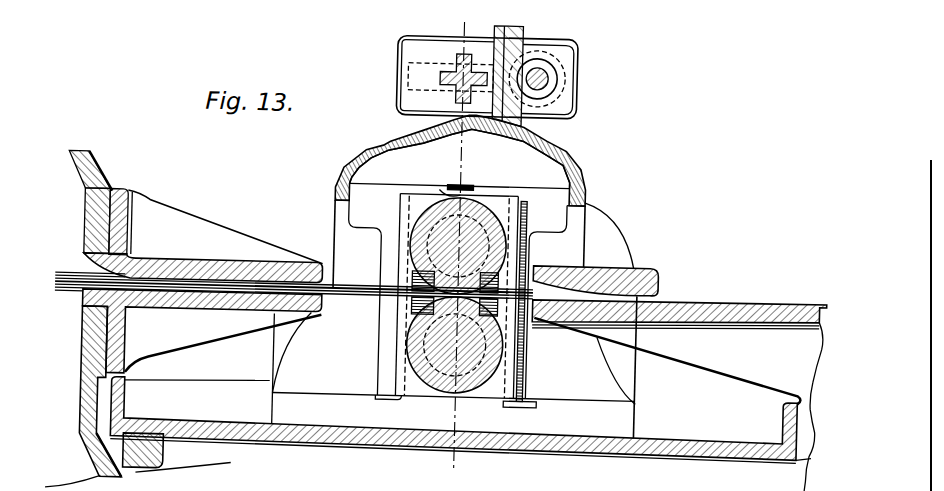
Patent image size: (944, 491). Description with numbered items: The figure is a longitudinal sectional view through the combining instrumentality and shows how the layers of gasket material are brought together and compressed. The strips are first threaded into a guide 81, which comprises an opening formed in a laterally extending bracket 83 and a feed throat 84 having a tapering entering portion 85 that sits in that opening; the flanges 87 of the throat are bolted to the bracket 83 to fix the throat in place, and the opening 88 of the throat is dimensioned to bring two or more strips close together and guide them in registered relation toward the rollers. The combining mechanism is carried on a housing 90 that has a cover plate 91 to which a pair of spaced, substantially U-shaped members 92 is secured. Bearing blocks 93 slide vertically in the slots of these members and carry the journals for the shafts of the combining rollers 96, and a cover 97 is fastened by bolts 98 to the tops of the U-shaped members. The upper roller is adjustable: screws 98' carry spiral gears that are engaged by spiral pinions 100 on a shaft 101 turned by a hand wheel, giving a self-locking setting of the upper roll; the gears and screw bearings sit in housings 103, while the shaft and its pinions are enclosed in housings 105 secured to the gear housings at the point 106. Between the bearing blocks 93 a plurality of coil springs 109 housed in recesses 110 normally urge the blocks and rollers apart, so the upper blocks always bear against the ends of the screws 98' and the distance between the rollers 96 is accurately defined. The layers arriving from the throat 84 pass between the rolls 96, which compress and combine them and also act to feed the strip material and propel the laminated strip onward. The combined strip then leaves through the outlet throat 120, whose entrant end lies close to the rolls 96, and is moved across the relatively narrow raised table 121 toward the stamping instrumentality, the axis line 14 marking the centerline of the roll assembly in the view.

The center line of carriage 14 is at (458, 246).
The guide 81 is at (174, 226).
The bracket 83 is at (88, 233).
The feed throat 84 is at (180, 310).
The tapering entering portion 85 is at (83, 304).
The flanges 87 is at (115, 198).
The opening 88 is at (191, 271).
The housing 90 is at (167, 454).
The cover plate 91 is at (338, 436).
The U-shaped members 92 is at (607, 238).
The bearing blocks 93 is at (502, 214).
The combining rollers 96 is at (409, 251).
The cover 97 is at (505, 136).
The bolts 98 is at (461, 156).
The screws 98' is at (399, 320).
The spiral pinions 100 is at (541, 61).
The shaft 101 is at (545, 76).
The housings 103 is at (402, 39).
The housings 105 is at (554, 105).
The securing point 106 is at (499, 26).
The springs 109 is at (526, 318).
The recesses 110 is at (415, 299).
The outlet throat 120 is at (644, 265).
The table 121 is at (718, 306).